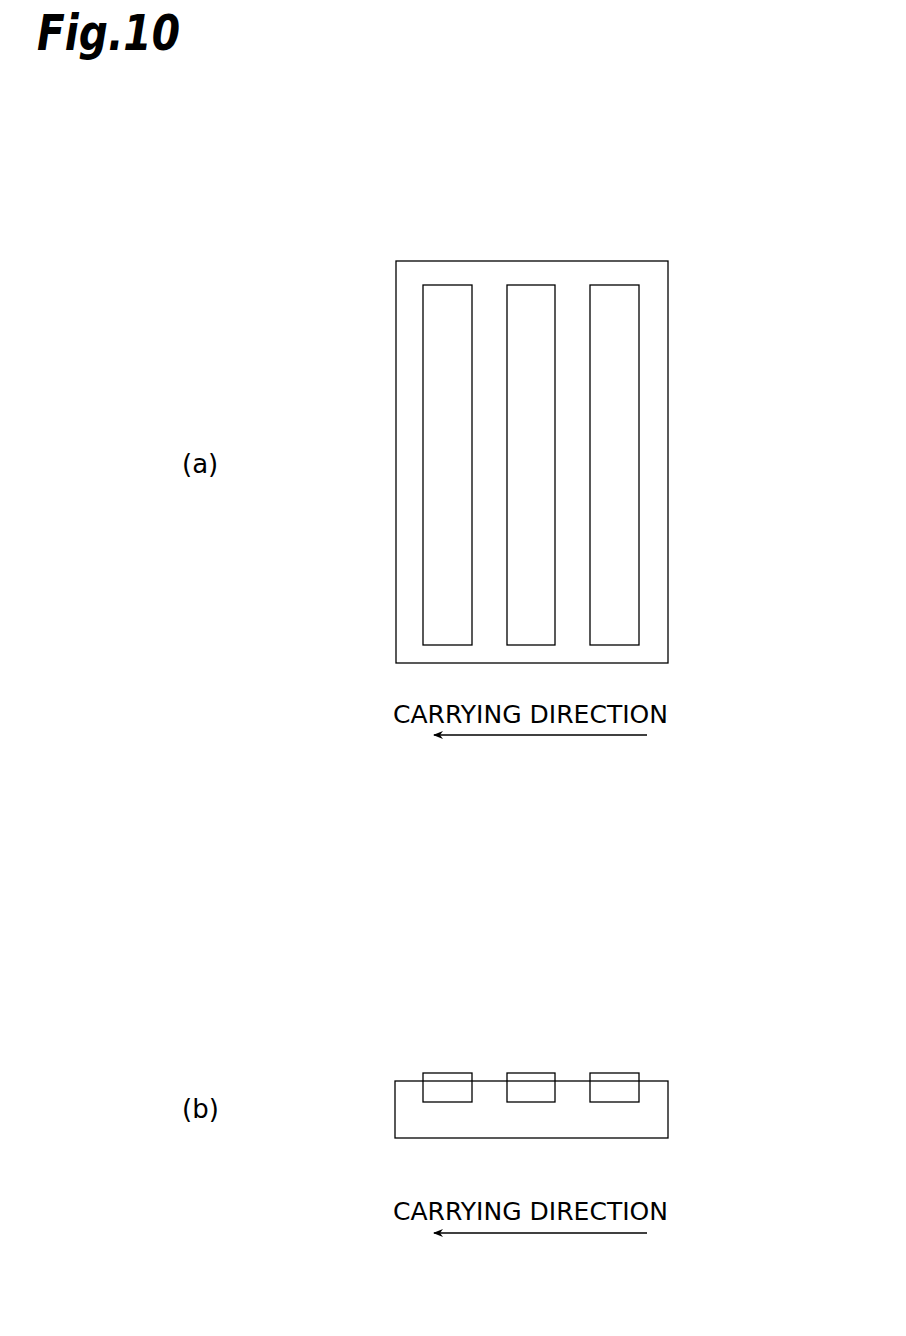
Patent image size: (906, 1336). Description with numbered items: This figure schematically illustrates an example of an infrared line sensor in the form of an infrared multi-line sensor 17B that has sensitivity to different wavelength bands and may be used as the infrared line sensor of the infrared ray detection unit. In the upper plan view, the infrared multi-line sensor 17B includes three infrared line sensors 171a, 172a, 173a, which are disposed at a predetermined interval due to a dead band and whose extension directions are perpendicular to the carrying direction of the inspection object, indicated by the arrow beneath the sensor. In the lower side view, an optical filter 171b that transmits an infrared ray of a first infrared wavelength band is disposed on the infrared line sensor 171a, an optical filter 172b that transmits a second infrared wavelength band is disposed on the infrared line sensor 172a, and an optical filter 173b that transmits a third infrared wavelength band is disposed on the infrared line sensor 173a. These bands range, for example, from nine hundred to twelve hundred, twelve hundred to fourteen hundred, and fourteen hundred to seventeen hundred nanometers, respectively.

The infrared multi-line sensor 17B is at (400, 232).
The infrared line sensor 171a is at (447, 381).
The infrared line sensor 172a is at (529, 315).
The infrared line sensor 173a is at (617, 380).
The optical filter 171b is at (447, 1075).
The optical filter 172b is at (533, 1075).
The optical filter 173b is at (615, 1075).